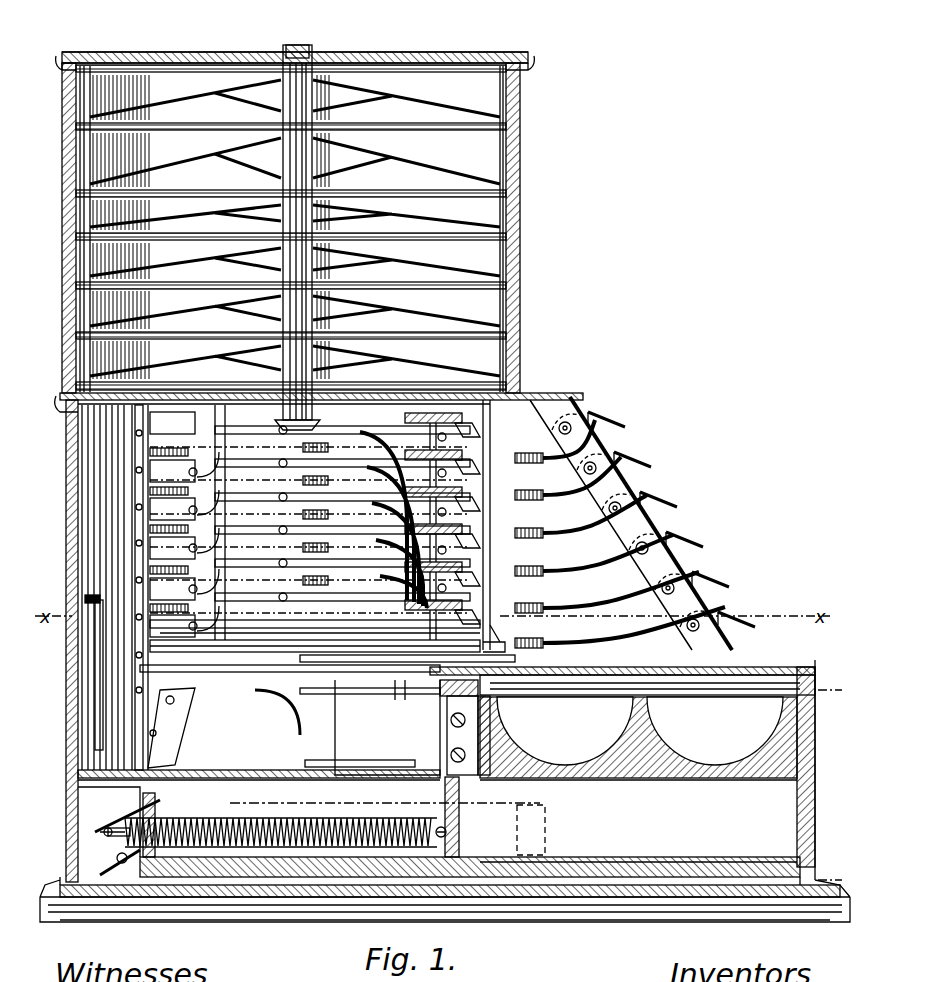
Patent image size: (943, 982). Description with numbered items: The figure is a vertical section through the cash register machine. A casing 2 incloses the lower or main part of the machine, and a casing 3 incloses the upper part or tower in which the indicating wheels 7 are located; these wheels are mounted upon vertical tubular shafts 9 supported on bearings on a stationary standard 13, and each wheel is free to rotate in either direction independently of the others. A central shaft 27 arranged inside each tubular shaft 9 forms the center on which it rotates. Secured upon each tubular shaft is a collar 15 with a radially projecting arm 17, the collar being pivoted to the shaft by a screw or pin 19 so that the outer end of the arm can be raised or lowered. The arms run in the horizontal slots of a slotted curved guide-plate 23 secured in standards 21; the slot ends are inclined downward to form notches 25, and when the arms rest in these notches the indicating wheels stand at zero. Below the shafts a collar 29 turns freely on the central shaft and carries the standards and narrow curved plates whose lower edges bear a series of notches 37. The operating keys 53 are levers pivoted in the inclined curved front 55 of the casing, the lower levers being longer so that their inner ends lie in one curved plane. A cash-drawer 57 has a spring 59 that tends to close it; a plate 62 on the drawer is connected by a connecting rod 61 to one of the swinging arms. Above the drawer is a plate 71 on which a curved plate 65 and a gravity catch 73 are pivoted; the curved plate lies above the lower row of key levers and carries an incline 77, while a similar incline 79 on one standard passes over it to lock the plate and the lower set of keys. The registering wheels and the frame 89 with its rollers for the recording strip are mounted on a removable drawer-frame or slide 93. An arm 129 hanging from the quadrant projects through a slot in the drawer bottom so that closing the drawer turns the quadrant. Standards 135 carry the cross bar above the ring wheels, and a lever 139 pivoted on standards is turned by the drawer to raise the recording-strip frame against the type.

The casing 2 is at (73, 680).
The casing 3 is at (512, 268).
The indicating wheels 7 is at (513, 98).
The vertical tubular shafts 9 is at (288, 60).
The stationary standard 13 is at (172, 509).
The collar 15 is at (292, 427).
The radially projecting arm 17 is at (330, 470).
The screws or pins 19 is at (272, 420).
The standards 21 is at (132, 538).
The slotted curved guide-plate 23 is at (118, 585).
The notches 25 is at (443, 526).
The central shaft 27 is at (305, 56).
The collar 29 is at (283, 712).
The notches 37 is at (150, 455).
The operating keys 53 is at (655, 493).
The inclined curved front 55 is at (612, 450).
The cash-drawer 57 is at (638, 803).
The spring 59 is at (480, 840).
The connecting rod 61 is at (310, 657).
The plate 62 is at (378, 692).
The curved plate 65 is at (507, 645).
The plate 71 is at (752, 668).
The gravity catch 73 is at (583, 680).
The incline 77 is at (236, 450).
The incline 79 is at (490, 628).
The frame 89 is at (172, 728).
The drawer-frame or slide 93 is at (365, 763).
The arm 129 is at (300, 813).
The standards 135 is at (93, 637).
The lever 139 is at (140, 793).